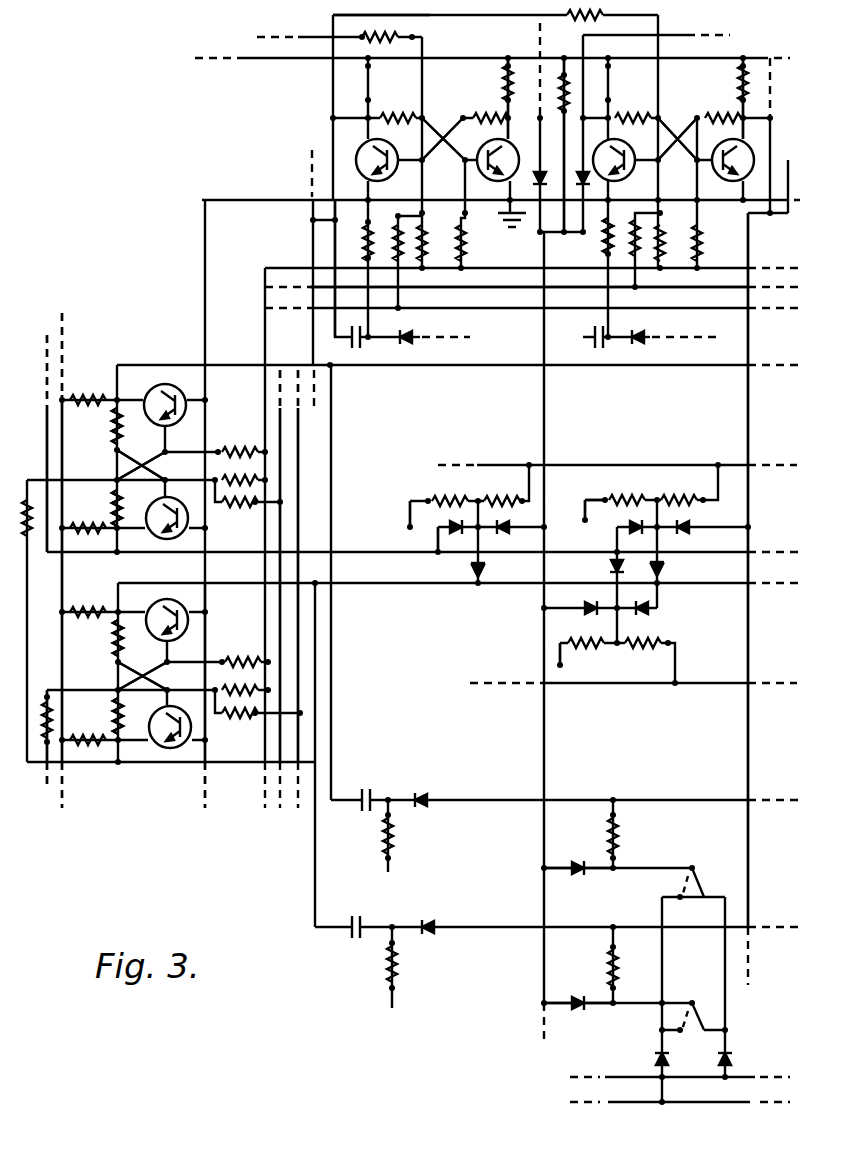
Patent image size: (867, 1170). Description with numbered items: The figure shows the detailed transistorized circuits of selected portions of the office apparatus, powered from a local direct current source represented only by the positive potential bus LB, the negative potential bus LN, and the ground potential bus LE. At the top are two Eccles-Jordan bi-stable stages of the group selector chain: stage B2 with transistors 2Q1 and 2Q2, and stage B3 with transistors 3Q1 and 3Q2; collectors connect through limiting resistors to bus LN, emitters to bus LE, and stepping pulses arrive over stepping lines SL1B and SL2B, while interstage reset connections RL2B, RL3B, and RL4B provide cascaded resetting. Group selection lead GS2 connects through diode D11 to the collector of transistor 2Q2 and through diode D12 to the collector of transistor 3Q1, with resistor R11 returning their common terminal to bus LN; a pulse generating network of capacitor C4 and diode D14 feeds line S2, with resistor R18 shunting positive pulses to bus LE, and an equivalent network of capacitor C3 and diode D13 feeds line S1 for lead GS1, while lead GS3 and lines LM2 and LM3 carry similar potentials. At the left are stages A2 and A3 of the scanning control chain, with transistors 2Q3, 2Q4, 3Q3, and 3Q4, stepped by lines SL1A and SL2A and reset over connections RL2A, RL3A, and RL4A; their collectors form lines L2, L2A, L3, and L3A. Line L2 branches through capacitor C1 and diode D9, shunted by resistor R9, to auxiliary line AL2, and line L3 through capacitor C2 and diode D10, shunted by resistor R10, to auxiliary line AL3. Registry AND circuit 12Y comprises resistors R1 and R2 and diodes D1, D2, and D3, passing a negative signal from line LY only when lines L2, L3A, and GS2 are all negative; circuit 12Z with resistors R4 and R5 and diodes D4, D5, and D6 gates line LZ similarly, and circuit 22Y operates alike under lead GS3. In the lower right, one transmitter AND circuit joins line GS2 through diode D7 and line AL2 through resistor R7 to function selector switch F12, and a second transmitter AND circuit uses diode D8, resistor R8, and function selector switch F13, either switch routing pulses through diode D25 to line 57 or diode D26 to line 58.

The interstage reset connection RL2B is at (310, 37).
The interstage reset connection RL3B is at (427, 16).
The interstage reset connection RL4B is at (690, 27).
The negative potential bus LN is at (236, 60).
The line LM2 is at (539, 64).
The resistor R11 is at (560, 70).
The line LM3 is at (769, 98).
The group selector chain stage B2 is at (481, 100).
The group selector chain stage B3 is at (726, 97).
The diode D11 is at (543, 168).
The transistor 2Q1 is at (410, 172).
The transistor 2Q2 is at (488, 178).
The transistor 3Q1 is at (645, 172).
The transistor 3Q2 is at (730, 174).
The ground potential bus LE is at (255, 185).
The diode D12 is at (599, 195).
The resistor R18 is at (605, 245).
The positive potential bus LB is at (285, 255).
The stepping line SL1B is at (532, 284).
The stepping line SL2B is at (532, 304).
The group selection lead GS2 is at (540, 278).
The group selection lead GS1 is at (317, 333).
The capacitor C3 is at (353, 342).
The line 51 S1 is at (426, 337).
The diode D13 is at (404, 342).
The capacitor C4 is at (592, 340).
The diode D14 is at (636, 336).
The line 52 S2 is at (696, 337).
The group selection lead GS3 is at (748, 337).
The registry matrix line L3 is at (244, 348).
The interstage reset connection RL4A is at (47, 348).
The transistor 3Q4 is at (168, 390).
The stepping line SL1A is at (280, 398).
The stepping line SL2A is at (298, 422).
The scanning control chain stage A3 is at (102, 468).
The transistor 3Q3 is at (166, 495).
The registry matrix line L3A is at (252, 540).
The interstage reset connection RL3A is at (27, 578).
The registry matrix line L2 is at (243, 570).
The scanning control chain stage A2 is at (102, 674).
The transistor 2Q4 is at (158, 632).
The transistor 2Q3 is at (160, 695).
The registry matrix line L2A is at (243, 762).
The interstage reset connection RL2A is at (46, 792).
The receiver signal line LY is at (754, 465).
The resistor R1 is at (450, 485).
The resistor R2 is at (506, 485).
The diode D2 is at (454, 523).
The diode D3 is at (507, 525).
The registry AND circuit 12Y is at (418, 548).
The diode D1 is at (486, 565).
The registry AND circuit 22Y is at (596, 548).
The diode D5 is at (608, 570).
The diode D6 is at (590, 607).
The diode D4 is at (642, 604).
The resistor R5 is at (582, 628).
The resistor R4 is at (638, 639).
The registry AND circuit 12Z is at (631, 672).
The receiver signal line LZ is at (754, 683).
The capacitor C2 is at (358, 793).
The diode D10 is at (424, 794).
The auxiliary line AL3 is at (515, 790).
The resistor R10 is at (394, 835).
The capacitor C1 is at (340, 921).
The diode D9 is at (435, 910).
The auxiliary line AL2 is at (515, 915).
The resistor R9 is at (396, 962).
The resistor R8 is at (626, 826).
The function selector switch F13 is at (698, 867).
The diode D8 is at (588, 875).
The resistor R7 is at (616, 970).
The function selector switch F12 is at (702, 1009).
The diode D7 is at (588, 1010).
The diode D25 is at (656, 1050).
The diode D26 is at (734, 1051).
The output line 58 is at (778, 1080).
The output line 57 is at (750, 1102).